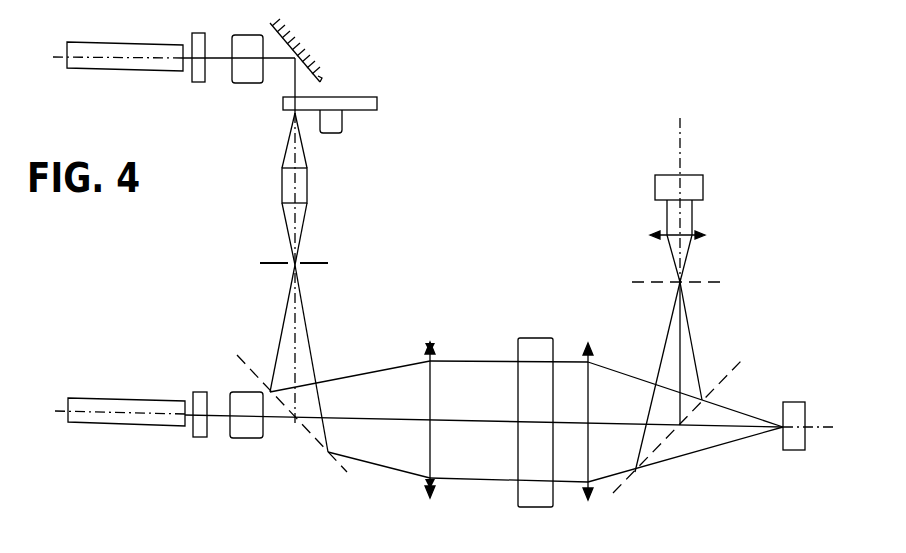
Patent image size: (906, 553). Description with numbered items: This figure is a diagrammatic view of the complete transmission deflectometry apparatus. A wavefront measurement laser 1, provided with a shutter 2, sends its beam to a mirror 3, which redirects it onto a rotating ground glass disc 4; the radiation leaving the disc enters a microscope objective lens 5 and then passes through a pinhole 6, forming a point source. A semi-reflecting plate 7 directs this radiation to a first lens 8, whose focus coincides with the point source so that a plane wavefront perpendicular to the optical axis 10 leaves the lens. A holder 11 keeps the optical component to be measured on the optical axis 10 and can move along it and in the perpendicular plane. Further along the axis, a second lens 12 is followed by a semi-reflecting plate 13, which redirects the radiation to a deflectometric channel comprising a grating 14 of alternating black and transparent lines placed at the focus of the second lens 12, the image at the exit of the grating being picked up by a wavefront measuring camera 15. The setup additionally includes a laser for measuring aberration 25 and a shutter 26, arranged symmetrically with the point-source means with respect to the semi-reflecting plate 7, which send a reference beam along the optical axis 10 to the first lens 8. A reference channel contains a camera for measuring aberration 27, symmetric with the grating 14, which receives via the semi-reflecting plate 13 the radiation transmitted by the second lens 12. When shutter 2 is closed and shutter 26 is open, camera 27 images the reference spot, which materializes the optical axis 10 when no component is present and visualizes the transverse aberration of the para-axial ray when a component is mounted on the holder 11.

The wavefront measurement laser 1 is at (142, 42).
The shutter 2 is at (248, 35).
The mirror 3 is at (318, 70).
The rotating ground glass disc 4 is at (360, 103).
The microscope objective lens 5 is at (288, 178).
The pinhole 6 is at (275, 263).
The semi-reflecting plate 7 is at (243, 352).
The first lens 8 is at (433, 373).
The optical axis 10 is at (377, 417).
The holder 11 is at (538, 338).
The second lens 12 is at (590, 387).
The semi-reflecting plate 13 is at (733, 375).
The grating 14 is at (650, 282).
The wavefront measuring camera 15 is at (652, 190).
The laser for measuring aberration 25 is at (147, 400).
The shutter 26 is at (243, 425).
The camera for measuring aberration 27 is at (790, 443).